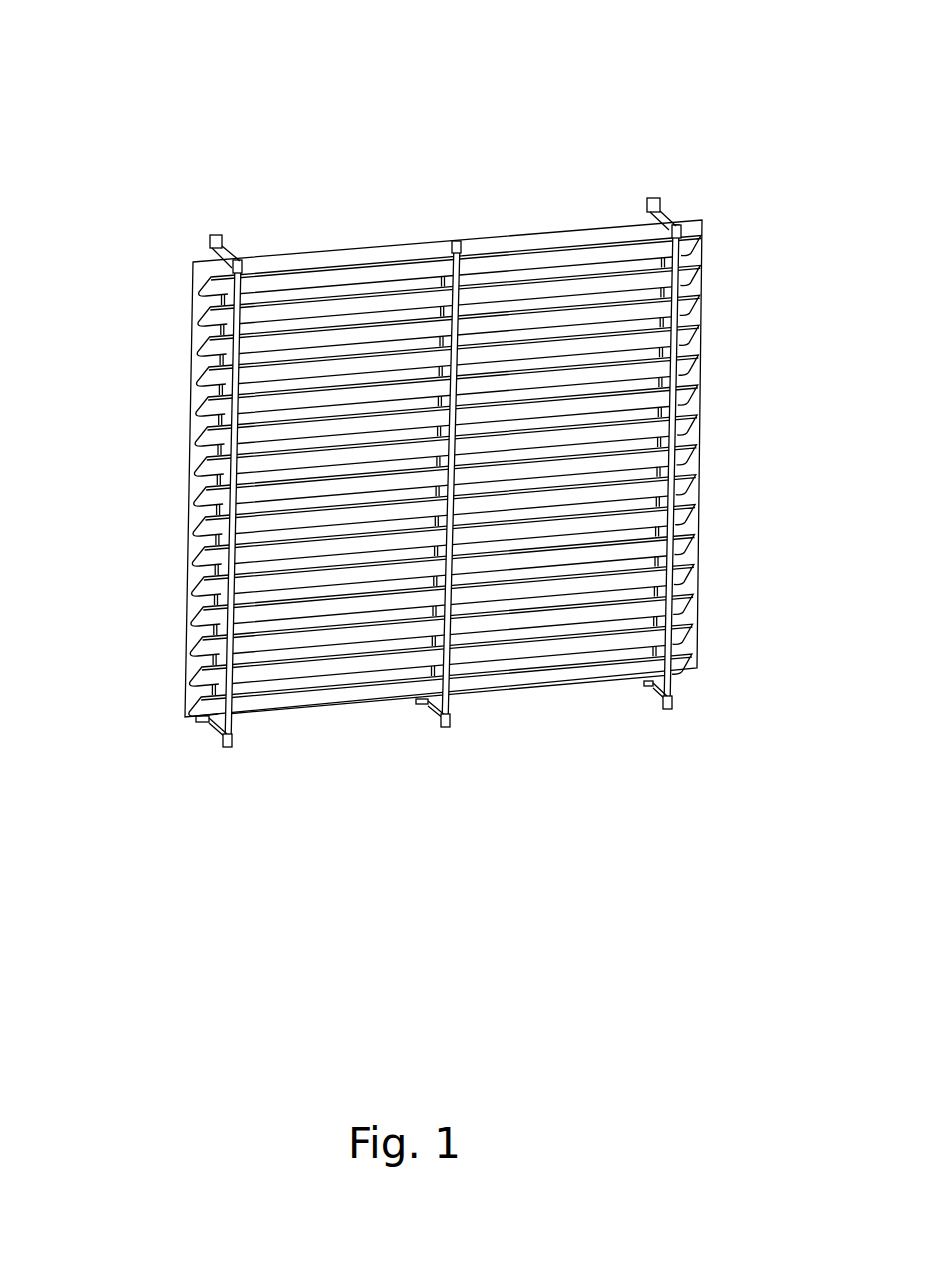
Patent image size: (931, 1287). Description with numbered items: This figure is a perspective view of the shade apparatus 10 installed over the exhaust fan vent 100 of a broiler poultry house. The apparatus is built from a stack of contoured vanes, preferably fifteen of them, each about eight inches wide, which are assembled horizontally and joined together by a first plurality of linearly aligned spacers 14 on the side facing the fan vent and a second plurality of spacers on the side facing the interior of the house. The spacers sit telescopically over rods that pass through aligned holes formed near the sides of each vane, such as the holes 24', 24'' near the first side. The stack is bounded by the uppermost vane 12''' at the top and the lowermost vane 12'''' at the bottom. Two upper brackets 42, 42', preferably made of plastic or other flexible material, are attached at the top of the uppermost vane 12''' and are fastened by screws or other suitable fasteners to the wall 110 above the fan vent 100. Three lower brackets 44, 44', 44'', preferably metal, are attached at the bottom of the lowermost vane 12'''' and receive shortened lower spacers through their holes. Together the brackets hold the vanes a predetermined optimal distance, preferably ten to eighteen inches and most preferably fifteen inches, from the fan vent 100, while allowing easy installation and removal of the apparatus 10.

The shade apparatus 10 is at (128, 118).
The exhaust fan vent 100 is at (683, 288).
The wall 110 is at (417, 217).
The uppermost vane 12''' is at (468, 194).
The lowermost vane 12'''' is at (473, 725).
The first plurality of linearly aligned spacers 14 is at (198, 352).
The hole 24' is at (536, 388).
The hole 24'' is at (762, 390).
The upper bracket 42 is at (221, 180).
The upper bracket 42' is at (673, 126).
The lower bracket 44 is at (204, 786).
The lower bracket 44' is at (458, 764).
The lower bracket 44'' is at (713, 728).